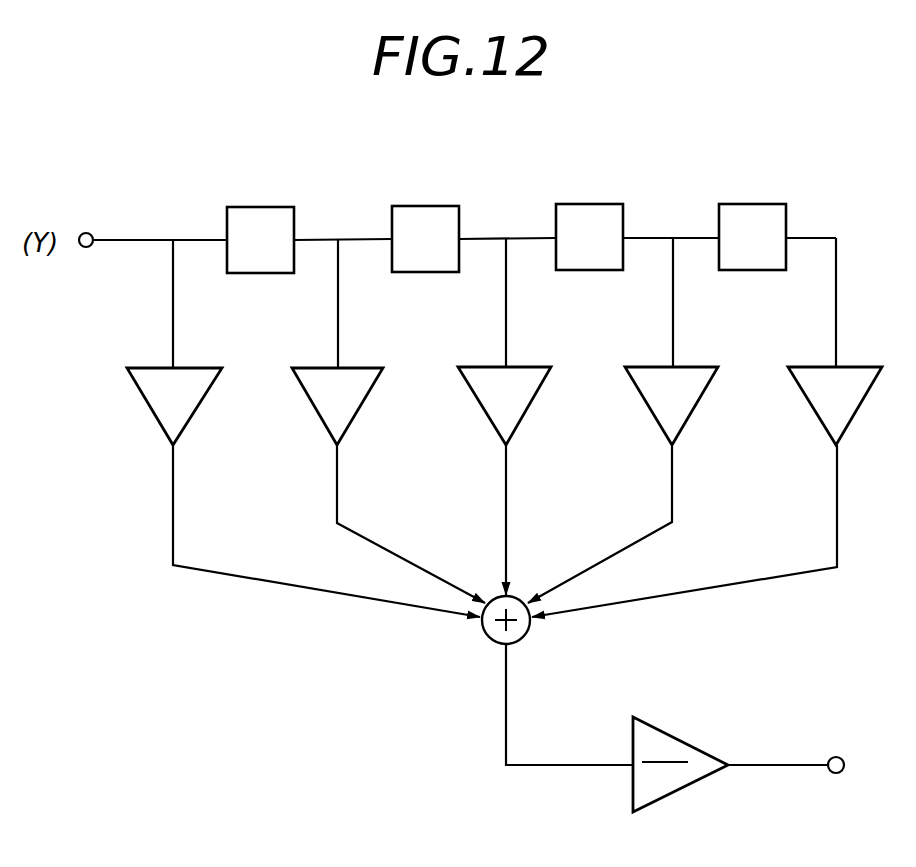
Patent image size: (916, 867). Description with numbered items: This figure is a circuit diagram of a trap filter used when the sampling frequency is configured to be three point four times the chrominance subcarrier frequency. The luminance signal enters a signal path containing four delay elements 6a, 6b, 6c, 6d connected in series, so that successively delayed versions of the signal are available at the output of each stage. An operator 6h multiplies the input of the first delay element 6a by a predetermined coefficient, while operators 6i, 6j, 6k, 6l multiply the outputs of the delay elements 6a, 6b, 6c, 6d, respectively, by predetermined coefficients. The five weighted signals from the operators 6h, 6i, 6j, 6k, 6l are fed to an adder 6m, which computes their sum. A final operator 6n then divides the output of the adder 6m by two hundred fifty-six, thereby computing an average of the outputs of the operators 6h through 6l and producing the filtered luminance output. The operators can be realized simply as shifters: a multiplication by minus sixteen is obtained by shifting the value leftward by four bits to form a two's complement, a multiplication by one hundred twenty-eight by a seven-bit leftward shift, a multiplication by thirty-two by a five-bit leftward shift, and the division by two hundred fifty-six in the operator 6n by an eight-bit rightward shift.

The delay element 6a is at (263, 207).
The delay element 6b is at (427, 206).
The delay element 6c is at (589, 204).
The delay element 6d is at (753, 204).
The operator 6h is at (152, 420).
The operator 6i is at (320, 418).
The operator 6j is at (488, 418).
The operator 6k is at (650, 416).
The operator 6l is at (820, 418).
The adder 6m is at (483, 637).
The operator 6n is at (632, 796).